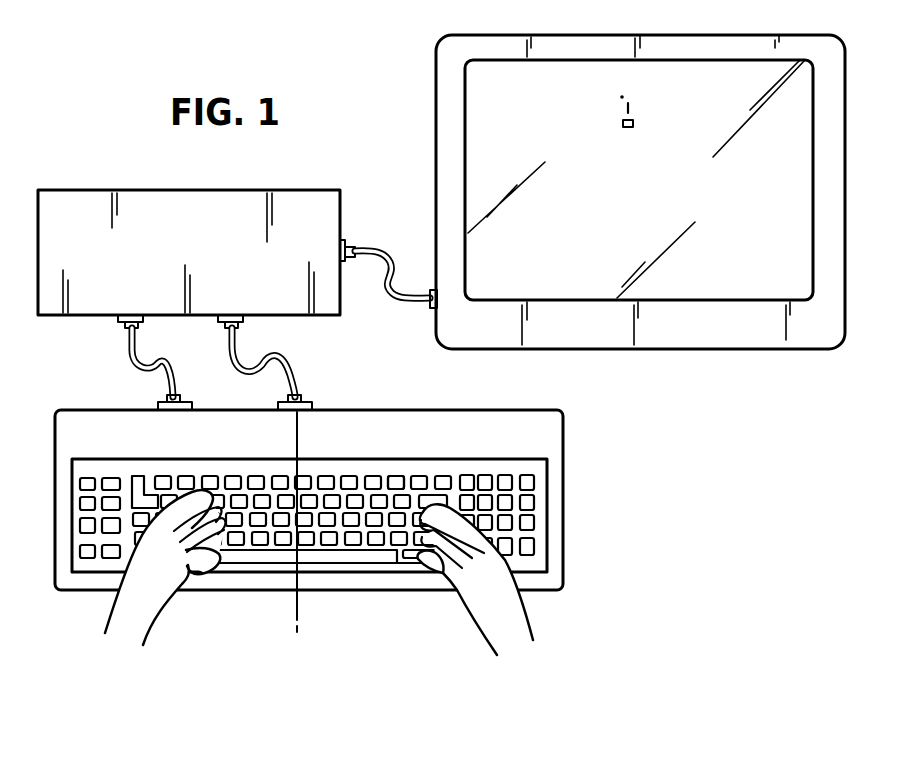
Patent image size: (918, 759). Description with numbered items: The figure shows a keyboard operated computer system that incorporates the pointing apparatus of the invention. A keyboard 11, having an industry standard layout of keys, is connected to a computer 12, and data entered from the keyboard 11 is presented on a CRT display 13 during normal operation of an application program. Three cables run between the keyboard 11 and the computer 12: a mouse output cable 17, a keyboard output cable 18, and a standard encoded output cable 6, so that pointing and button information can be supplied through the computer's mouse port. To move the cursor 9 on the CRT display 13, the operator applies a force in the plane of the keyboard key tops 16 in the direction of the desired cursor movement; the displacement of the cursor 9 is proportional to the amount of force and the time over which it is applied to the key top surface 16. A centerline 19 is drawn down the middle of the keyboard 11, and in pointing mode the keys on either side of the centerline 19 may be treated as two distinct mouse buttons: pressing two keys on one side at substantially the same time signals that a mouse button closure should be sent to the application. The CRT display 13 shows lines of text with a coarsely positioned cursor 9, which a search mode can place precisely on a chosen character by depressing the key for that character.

The standard encoded output cable 6 is at (388, 252).
The cursor 9 is at (628, 128).
The keyboard 11 is at (563, 438).
The computer 12 is at (183, 190).
The CRT display 13 is at (436, 145).
The keyboard key tops 16 is at (398, 480).
The mouse output cable 17 is at (232, 355).
The keyboard output cable 18 is at (130, 355).
The centerline 19 is at (298, 606).